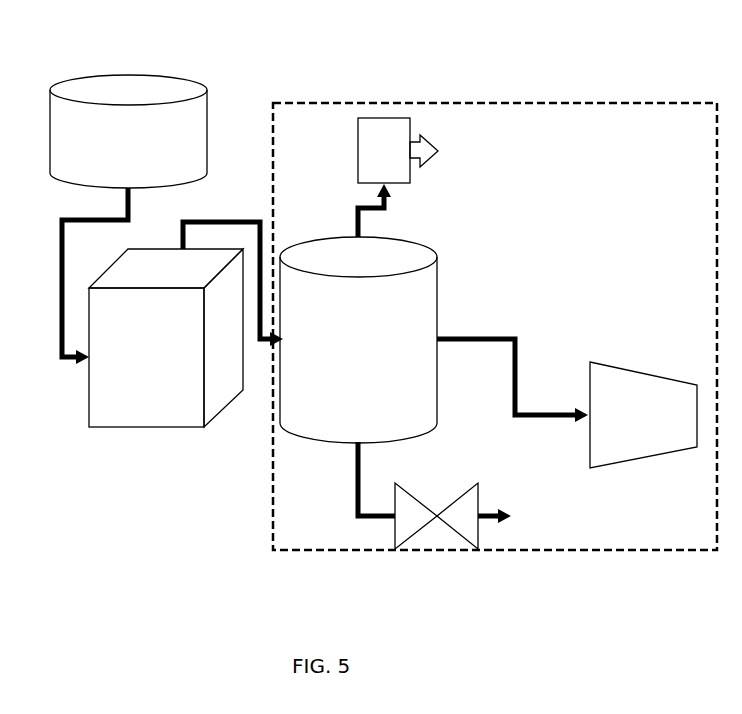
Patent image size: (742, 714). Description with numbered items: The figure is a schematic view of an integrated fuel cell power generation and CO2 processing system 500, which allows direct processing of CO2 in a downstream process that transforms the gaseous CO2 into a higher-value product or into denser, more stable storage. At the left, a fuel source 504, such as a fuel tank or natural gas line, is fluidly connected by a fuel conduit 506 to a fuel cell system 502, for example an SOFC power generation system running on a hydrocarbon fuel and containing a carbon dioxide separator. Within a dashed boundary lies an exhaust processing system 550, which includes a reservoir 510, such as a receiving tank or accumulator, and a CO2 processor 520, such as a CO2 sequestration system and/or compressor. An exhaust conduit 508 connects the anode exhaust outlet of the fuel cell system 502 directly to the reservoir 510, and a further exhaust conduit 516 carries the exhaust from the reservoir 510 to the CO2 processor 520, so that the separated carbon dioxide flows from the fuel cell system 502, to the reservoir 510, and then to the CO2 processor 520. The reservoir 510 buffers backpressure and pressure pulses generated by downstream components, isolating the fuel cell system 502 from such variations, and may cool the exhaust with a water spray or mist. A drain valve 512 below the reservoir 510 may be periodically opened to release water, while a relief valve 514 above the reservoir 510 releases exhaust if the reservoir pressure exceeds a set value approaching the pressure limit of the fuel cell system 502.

The integrated fuel cell power generation and CO2 processing system 500 is at (298, 44).
The fuel cell system 502 is at (166, 369).
The fuel source 504 is at (183, 138).
The fuel conduit 506 is at (58, 352).
The exhaust conduit 508 is at (257, 220).
The reservoir 510 is at (376, 362).
The drain valve 512 is at (437, 516).
The relief valve 514 is at (402, 160).
The exhaust conduit 516 is at (508, 335).
The CO2 processor 520 is at (659, 420).
The exhaust processing system 550 is at (497, 554).